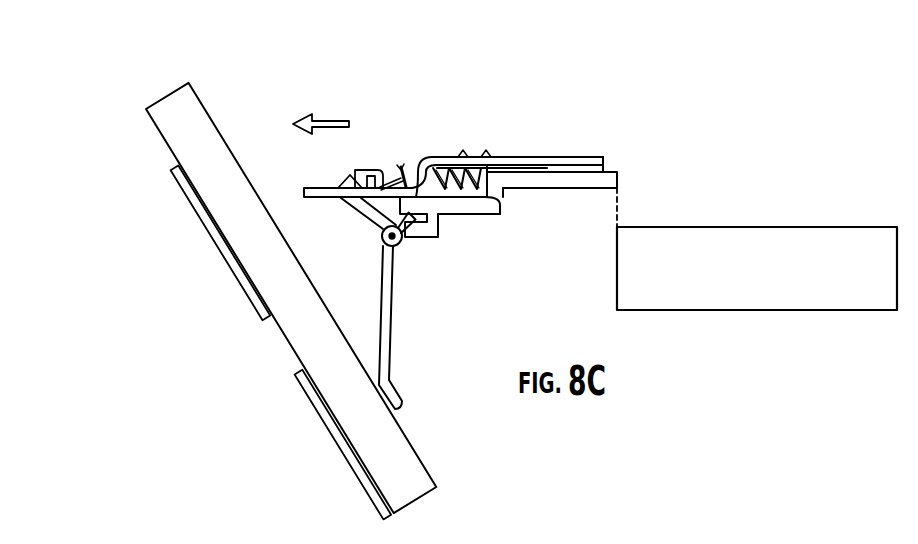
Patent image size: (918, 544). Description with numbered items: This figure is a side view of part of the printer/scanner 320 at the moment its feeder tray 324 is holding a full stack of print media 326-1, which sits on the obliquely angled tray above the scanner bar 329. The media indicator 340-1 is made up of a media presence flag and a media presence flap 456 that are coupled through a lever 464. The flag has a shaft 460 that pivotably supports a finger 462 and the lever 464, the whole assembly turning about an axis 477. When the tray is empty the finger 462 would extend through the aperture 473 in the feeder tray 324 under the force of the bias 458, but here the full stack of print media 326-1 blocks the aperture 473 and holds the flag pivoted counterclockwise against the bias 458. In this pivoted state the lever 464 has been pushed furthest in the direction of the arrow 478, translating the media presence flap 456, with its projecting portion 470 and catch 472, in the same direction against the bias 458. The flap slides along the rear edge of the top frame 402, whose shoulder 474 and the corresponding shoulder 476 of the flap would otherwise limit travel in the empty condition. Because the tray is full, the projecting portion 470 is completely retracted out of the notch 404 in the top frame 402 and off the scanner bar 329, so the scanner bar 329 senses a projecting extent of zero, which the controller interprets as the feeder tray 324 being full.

The printer/scanner 320 is at (76, 119).
The print media 326-1 is at (210, 113).
The feeder tray 324 is at (186, 199).
The aperture 473 is at (299, 370).
The media indicator 340-1 is at (410, 66).
The arrow 478 is at (324, 118).
The catch 472 is at (313, 187).
The bias 458 is at (473, 152).
The projecting portion 470 is at (588, 157).
The media presence flap 456 is at (538, 148).
The top frame 402 is at (491, 198).
The notch 404 is at (615, 178).
The shoulder 474 is at (503, 196).
The shoulder 476 is at (442, 168).
The lever 464 is at (358, 210).
The axis 477 is at (383, 250).
The shaft 460 is at (398, 247).
The finger 462 is at (392, 351).
The scanner bar 329 is at (826, 228).